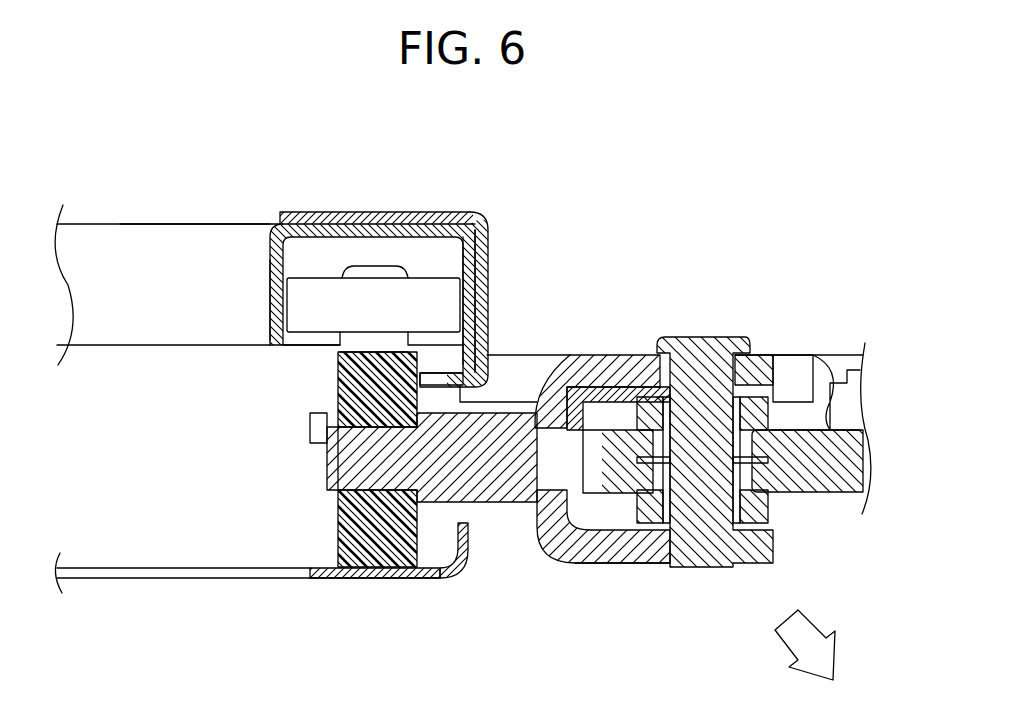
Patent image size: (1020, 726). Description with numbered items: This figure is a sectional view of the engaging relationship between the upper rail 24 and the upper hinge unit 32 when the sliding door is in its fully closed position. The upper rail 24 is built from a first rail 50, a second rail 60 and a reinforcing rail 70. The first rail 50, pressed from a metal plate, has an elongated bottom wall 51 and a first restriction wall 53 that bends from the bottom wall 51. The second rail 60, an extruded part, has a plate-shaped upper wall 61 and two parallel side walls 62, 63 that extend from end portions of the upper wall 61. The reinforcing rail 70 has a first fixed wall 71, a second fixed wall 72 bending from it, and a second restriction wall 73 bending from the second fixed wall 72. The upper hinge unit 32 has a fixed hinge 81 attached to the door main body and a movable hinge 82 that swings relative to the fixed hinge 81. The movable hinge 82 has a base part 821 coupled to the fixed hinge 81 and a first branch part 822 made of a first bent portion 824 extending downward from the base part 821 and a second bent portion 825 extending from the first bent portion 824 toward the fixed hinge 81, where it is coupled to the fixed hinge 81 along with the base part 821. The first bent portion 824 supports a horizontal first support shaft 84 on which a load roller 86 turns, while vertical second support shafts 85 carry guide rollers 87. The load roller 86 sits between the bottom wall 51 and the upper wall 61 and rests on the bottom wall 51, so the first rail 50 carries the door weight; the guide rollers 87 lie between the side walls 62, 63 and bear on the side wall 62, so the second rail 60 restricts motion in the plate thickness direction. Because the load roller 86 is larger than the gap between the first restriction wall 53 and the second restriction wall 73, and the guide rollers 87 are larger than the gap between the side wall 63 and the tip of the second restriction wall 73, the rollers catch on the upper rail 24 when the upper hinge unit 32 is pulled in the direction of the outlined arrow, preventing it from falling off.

The upper rail 24 is at (139, 196).
The upper wall 61 is at (212, 224).
The side wall 63 is at (268, 285).
The second rail 60 is at (141, 348).
The guide roller 87 is at (313, 333).
The first fixed wall 71 is at (380, 212).
The reinforcing rail 70 is at (379, 278).
The second support shaft 85 is at (378, 263).
The second fixed wall 72 is at (490, 258).
The side wall 62 is at (475, 293).
The second restriction wall 73 is at (433, 393).
The upper hinge unit 32 is at (679, 416).
The base part 821 is at (606, 354).
The movable hinge 82 is at (758, 352).
The first support shaft 84 is at (327, 470).
The load roller 86 is at (338, 518).
The fixed hinge 81 is at (808, 493).
The first rail 50 is at (272, 595).
The bottom wall 51 is at (387, 578).
The first restriction wall 53 is at (470, 547).
The first bent portion 824 is at (580, 504).
The first branch part 822 is at (518, 517).
The second bent portion 825 is at (636, 592).